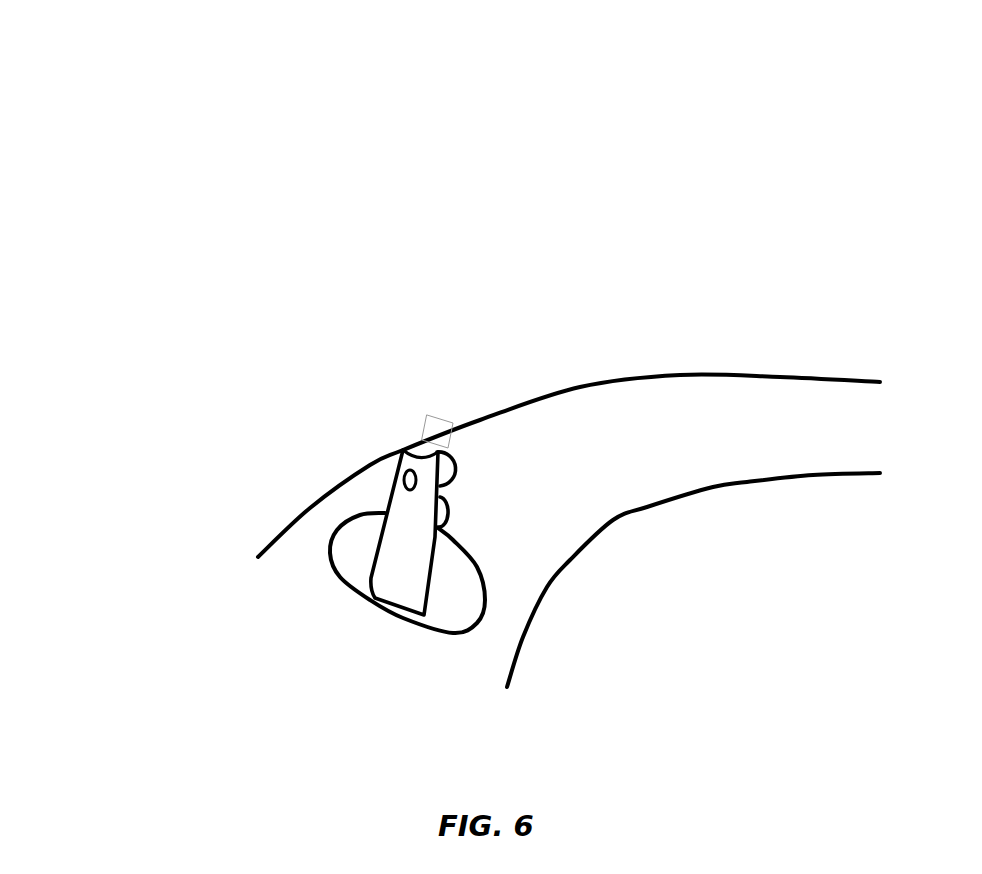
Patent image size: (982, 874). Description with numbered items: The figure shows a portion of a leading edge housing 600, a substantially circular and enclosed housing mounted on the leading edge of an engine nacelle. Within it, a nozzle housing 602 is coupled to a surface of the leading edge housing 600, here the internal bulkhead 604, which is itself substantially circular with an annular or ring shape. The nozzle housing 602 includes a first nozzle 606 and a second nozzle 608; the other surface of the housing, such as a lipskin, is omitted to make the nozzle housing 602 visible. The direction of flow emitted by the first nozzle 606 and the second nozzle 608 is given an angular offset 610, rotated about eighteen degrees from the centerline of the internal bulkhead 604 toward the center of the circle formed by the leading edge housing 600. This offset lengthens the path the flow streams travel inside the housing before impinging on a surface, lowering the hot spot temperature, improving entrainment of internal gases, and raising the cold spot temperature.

The leading edge housing 600 is at (755, 58).
The nozzle housing 602 is at (395, 558).
The internal bulkhead 604 is at (445, 673).
The first nozzle 606 is at (440, 510).
The second nozzle 608 is at (433, 462).
The angular offset 610 is at (440, 420).